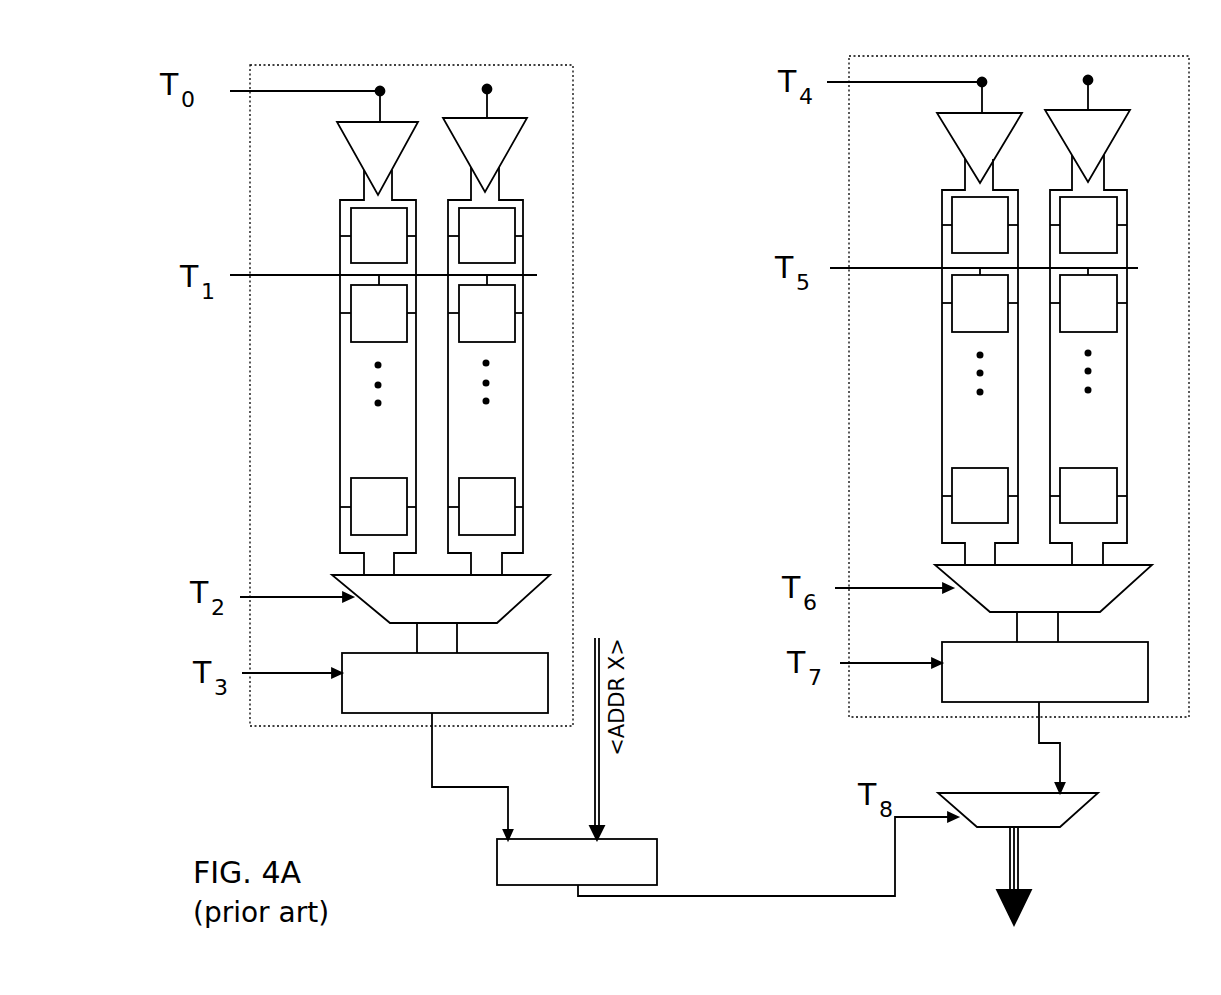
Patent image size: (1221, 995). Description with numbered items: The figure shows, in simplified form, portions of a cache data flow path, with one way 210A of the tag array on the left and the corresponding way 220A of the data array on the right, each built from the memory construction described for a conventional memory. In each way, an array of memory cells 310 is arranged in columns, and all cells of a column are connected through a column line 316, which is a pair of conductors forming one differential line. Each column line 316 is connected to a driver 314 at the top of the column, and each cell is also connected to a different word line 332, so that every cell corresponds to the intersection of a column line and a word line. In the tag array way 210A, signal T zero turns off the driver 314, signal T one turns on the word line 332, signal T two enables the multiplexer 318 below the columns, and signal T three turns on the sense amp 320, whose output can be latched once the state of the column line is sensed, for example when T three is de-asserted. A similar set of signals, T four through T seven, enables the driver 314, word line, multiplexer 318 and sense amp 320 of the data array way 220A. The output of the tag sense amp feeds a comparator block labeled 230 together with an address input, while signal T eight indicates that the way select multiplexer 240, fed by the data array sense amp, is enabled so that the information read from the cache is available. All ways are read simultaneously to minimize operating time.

The way of tag array 210A is at (570, 215).
The way of data array 220A is at (848, 208).
The driver 314 is at (350, 147).
The word line 332 is at (330, 274).
The memory cell 310 is at (1117, 292).
The column line 316 is at (1128, 405).
The multiplexer 318 is at (350, 575).
The sense amp 320 is at (343, 655).
The comparator 230 is at (630, 838).
The way select multiplexer 240 is at (1068, 818).